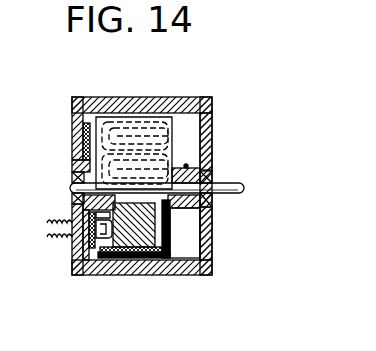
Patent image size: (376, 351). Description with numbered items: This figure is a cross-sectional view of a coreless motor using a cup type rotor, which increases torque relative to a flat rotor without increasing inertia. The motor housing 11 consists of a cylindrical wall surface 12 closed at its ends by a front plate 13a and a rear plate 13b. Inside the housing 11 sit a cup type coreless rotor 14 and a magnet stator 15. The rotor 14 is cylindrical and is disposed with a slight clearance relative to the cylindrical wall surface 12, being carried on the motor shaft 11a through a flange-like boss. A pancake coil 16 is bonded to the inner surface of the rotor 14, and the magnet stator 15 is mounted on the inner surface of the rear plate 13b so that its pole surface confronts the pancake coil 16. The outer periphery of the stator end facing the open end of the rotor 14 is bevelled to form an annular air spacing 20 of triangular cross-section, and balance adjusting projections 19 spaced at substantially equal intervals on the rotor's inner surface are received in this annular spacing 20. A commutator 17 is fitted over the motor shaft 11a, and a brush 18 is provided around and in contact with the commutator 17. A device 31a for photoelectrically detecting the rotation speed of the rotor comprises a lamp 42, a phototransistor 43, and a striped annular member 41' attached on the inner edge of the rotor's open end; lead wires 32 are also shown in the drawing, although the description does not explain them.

The motor housing 11 is at (226, 126).
The motor shaft 11a is at (244, 187).
The cylindrical wall surface 12 is at (163, 91).
The front plate 13a is at (205, 148).
The rear plate 13b is at (78, 136).
The cup type coreless rotor 14 is at (203, 268).
The magnet stator 15 is at (185, 233).
The pancake coil 16 is at (158, 254).
The commutator 17 is at (196, 208).
The brush 18 is at (205, 240).
The balance adjusting projections 19 is at (84, 256).
The annular air spacing 20 is at (73, 197).
The photoelectric rotation speed detecting device 31a is at (86, 242).
The spring 32 is at (47, 221).
The striped annular member 41' is at (109, 261).
The lamp 42 is at (131, 250).
The phototransistor 43 is at (95, 226).